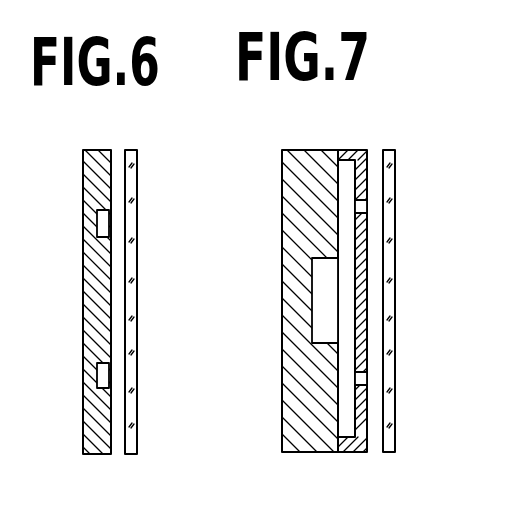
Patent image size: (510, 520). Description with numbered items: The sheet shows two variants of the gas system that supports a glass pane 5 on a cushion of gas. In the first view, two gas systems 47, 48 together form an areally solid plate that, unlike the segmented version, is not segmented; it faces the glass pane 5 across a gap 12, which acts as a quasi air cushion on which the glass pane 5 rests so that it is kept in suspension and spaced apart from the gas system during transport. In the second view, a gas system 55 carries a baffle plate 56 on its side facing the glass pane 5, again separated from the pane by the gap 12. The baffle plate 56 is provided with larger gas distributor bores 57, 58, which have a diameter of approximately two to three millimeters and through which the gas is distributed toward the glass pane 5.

In FIG. 6, the glass pane 5 is at (136, 174).
In FIG. 7, the glass pane 5 is at (394, 174).
In FIG. 6, the gap 12 is at (118, 156).
In FIG. 7, the gap 12 is at (373, 157).
In FIG. 6, the gas system 47 is at (90, 198).
In FIG. 6, the gas system 48 is at (93, 407).
In FIG. 7, the gas system 55 is at (318, 327).
In FIG. 7, the baffle plate 56 is at (352, 150).
In FIG. 7, the gas distributor bore 57 is at (366, 204).
In FIG. 7, the gas distributor bore 58 is at (367, 378).